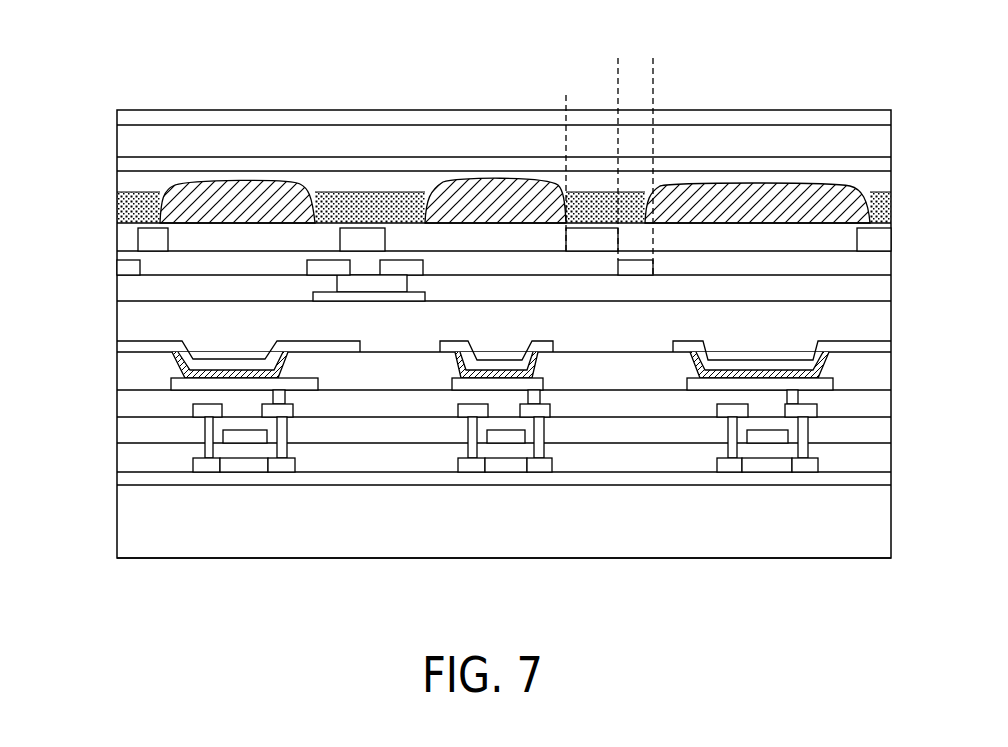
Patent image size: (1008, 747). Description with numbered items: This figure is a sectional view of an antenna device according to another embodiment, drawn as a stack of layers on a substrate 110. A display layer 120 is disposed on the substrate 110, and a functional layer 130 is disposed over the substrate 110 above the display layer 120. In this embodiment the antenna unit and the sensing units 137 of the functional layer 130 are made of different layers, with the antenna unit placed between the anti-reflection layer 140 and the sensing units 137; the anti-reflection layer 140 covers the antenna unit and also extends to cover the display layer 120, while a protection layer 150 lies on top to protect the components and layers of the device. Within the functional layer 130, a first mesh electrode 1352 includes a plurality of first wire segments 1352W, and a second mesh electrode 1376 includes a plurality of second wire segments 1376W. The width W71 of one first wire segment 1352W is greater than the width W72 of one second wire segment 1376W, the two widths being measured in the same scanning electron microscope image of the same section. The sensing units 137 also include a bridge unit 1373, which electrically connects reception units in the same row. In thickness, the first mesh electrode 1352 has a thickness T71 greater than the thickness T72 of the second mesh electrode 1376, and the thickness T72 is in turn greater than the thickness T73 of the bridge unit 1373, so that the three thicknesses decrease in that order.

The substrate 110 is at (680, 547).
The display layer 120 is at (110, 340).
The functional layer 130 is at (110, 225).
The sensing units 137 is at (350, 293).
The bridge unit 1373 is at (356, 453).
The anti-reflection layer 140 is at (110, 172).
The protection layer 150 is at (110, 112).
The first mesh electrode 1352 is at (575, 240).
The first wire segments 1352W is at (520, 125).
The second mesh electrode 1376 is at (645, 266).
The second wire segments 1376W is at (704, 137).
The thickness of the first mesh electrode T71 is at (352, 250).
The thickness of the second mesh electrode T72 is at (314, 261).
The thickness of the bridge unit T73 is at (348, 446).
The width of the first wire segment W71 is at (618, 90).
The width of the second wire segment W72 is at (653, 60).